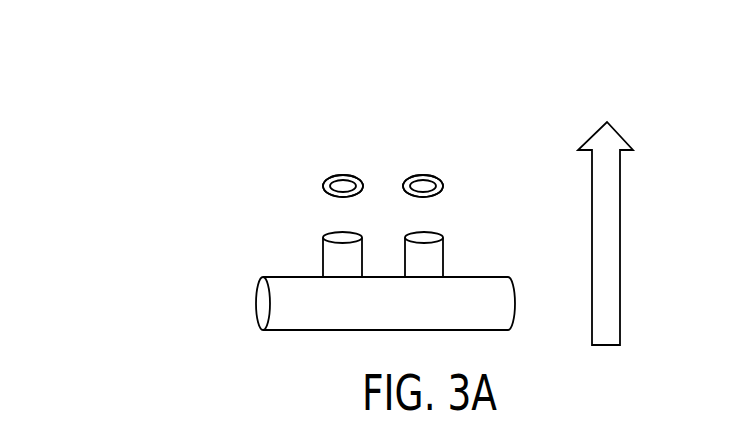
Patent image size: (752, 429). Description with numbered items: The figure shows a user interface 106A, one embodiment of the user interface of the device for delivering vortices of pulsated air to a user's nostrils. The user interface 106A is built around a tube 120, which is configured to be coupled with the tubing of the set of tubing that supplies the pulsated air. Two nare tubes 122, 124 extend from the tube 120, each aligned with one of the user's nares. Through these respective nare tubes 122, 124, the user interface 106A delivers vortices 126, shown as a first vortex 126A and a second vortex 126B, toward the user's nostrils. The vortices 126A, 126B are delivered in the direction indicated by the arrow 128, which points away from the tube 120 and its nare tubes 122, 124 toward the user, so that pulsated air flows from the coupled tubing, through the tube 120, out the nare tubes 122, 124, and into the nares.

The user interface 106A is at (118, 118).
The tube 120 is at (397, 319).
The nare tube 122 is at (330, 262).
The nare tube 124 is at (436, 262).
The vortices 126 is at (473, 102).
The vortex 126A is at (335, 176).
The vortex 126B is at (414, 176).
The arrow 128 is at (620, 232).